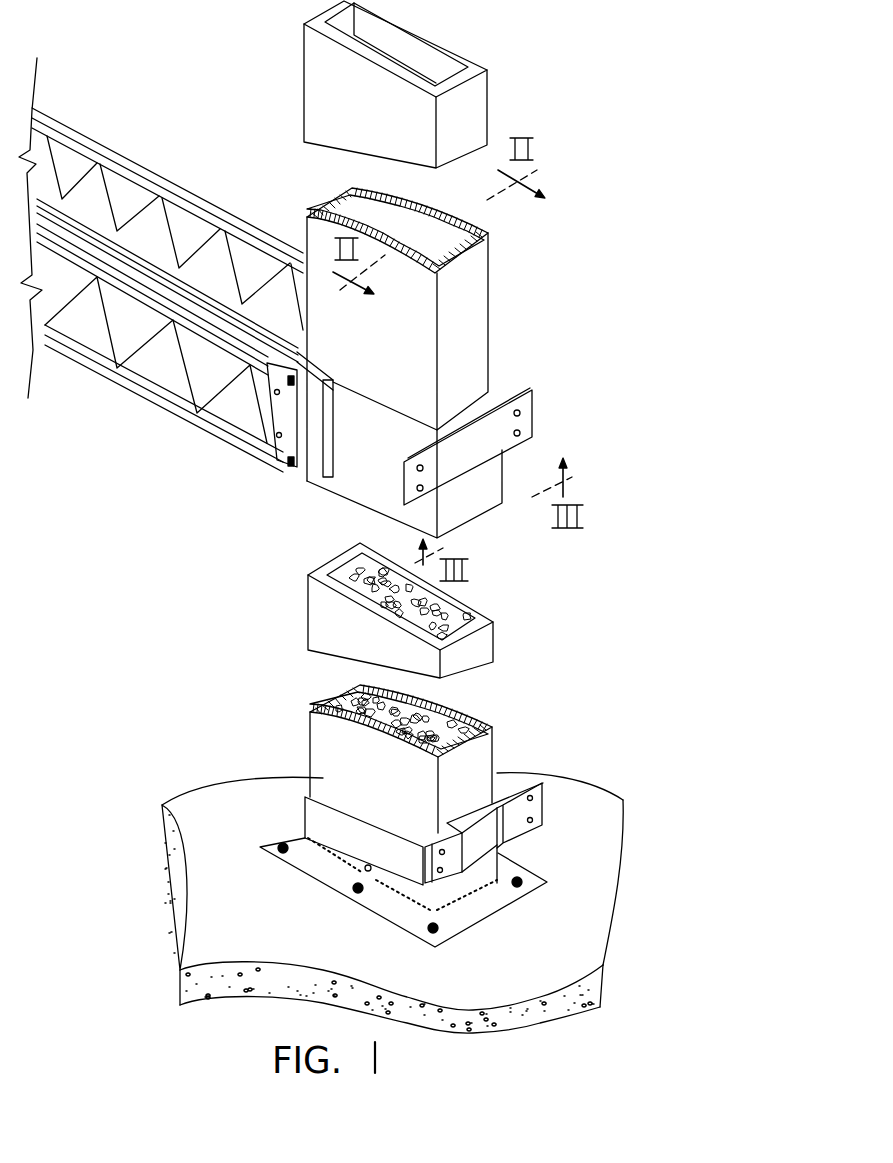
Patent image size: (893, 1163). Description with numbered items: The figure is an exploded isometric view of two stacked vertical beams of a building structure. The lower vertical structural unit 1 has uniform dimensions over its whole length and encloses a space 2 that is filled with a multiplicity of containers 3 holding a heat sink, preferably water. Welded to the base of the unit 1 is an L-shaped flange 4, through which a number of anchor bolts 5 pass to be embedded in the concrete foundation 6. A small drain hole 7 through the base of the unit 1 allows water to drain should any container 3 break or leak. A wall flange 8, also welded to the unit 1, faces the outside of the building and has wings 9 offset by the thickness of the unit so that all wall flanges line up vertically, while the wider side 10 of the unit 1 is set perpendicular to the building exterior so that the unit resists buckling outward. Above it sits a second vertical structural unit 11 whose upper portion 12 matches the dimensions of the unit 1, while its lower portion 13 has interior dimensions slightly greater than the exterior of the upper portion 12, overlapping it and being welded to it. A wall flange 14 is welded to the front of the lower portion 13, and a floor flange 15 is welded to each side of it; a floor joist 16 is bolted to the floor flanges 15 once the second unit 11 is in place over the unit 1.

The vertical structural unit 1 is at (388, 620).
The space 2 is at (348, 565).
The containers 3 is at (383, 575).
The L-shaped flange 4 is at (287, 826).
The anchor bolts 5 is at (520, 880).
The concrete foundation 6 is at (162, 892).
The drain hole 7 is at (368, 867).
The wall flange 8 is at (470, 797).
The wings 9 is at (525, 787).
The wider side 10 is at (365, 620).
The second vertical structural unit 11 is at (477, 56).
The upper portion 12 is at (307, 220).
The lower portion 13 is at (477, 517).
The wall flange 14 is at (533, 408).
The floor flange 15 is at (310, 473).
The floor joist 16 is at (170, 407).